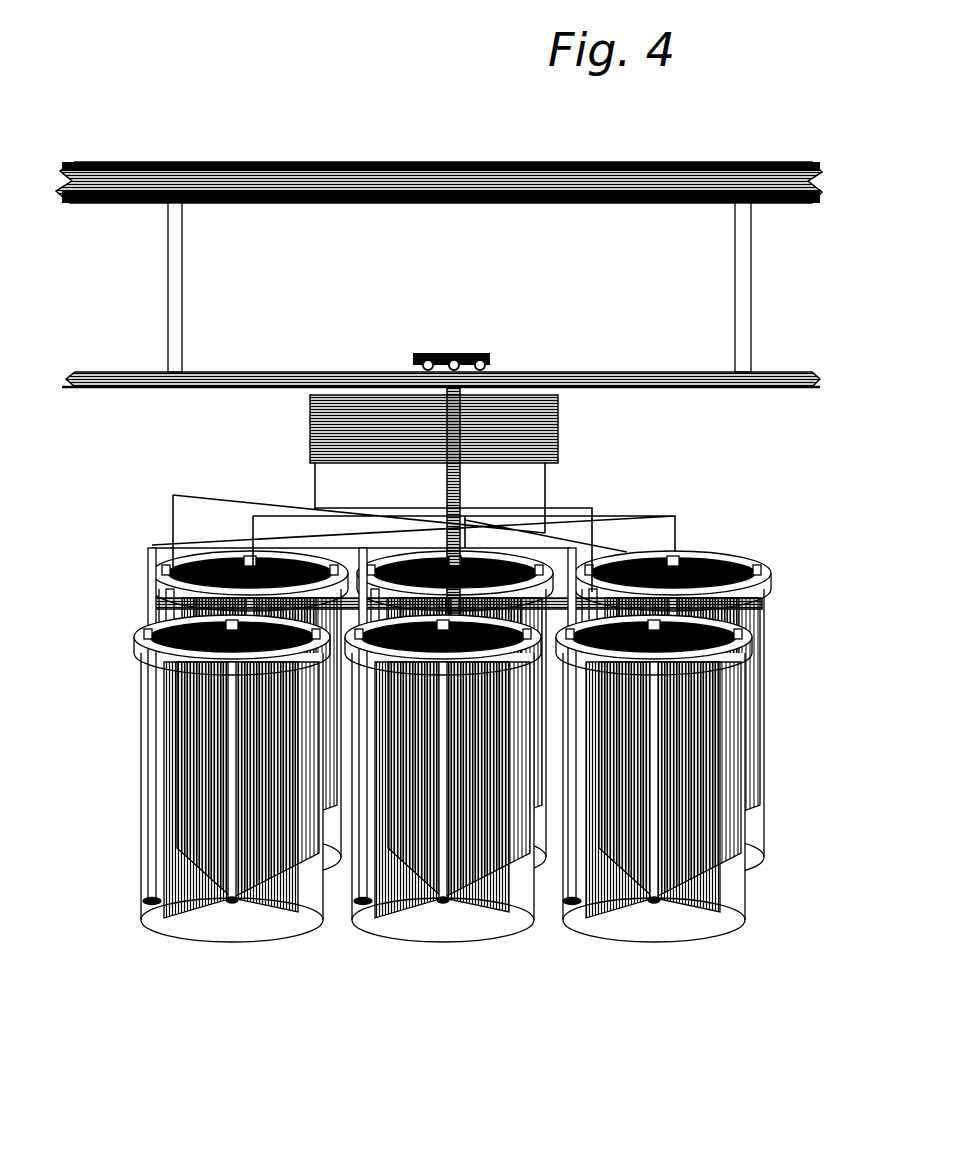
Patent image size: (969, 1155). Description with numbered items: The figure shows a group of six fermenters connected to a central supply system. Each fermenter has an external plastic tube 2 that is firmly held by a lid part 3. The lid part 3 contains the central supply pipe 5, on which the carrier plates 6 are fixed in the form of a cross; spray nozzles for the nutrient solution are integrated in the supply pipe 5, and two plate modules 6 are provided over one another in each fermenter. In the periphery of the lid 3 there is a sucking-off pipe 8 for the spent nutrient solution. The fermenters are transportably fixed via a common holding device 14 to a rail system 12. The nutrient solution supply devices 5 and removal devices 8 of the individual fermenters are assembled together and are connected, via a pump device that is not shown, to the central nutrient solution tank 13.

The external plastic tube 2 is at (290, 940).
The lid part 3 is at (716, 560).
The central supply pipe 5 is at (545, 497).
The carrier plates 6 is at (205, 912).
The sucking-off pipe 8 is at (305, 480).
The rail system 12 is at (588, 205).
The central nutrient solution tank 13 is at (558, 415).
The common holding device 14 is at (463, 487).